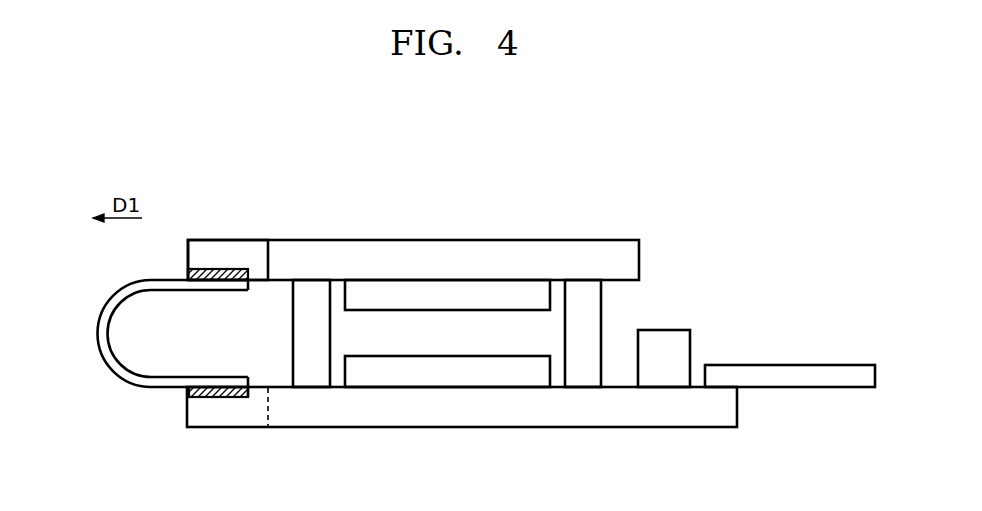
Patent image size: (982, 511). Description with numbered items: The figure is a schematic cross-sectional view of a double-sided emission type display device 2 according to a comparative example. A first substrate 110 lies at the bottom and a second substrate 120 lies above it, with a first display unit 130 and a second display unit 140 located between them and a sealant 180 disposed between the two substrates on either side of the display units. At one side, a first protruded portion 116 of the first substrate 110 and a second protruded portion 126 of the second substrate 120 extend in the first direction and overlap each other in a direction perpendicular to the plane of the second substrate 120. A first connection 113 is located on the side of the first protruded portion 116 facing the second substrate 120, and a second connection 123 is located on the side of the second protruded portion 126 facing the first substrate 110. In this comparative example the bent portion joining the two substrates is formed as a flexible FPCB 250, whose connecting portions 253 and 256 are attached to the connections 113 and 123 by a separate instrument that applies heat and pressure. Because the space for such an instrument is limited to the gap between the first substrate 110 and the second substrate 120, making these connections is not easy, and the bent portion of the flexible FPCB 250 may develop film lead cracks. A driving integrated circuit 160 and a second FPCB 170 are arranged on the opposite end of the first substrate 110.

The double-sided emission type display device 2 is at (717, 188).
The first substrate 110 is at (502, 417).
The first connection 113 is at (189, 390).
The first protruded portion 116 is at (237, 415).
The second substrate 120 is at (504, 252).
The second connection 123 is at (188, 272).
The second protruded portion 126 is at (239, 250).
The first display unit 130 is at (407, 374).
The second display unit 140 is at (412, 290).
The driving integrated circuit 160 is at (667, 337).
The second FPCB 170 is at (815, 368).
The sealant 180 is at (313, 290).
The flexible FPCB 250 is at (102, 332).
The connecting portion 253 is at (210, 395).
The connecting portion 256 is at (215, 270).